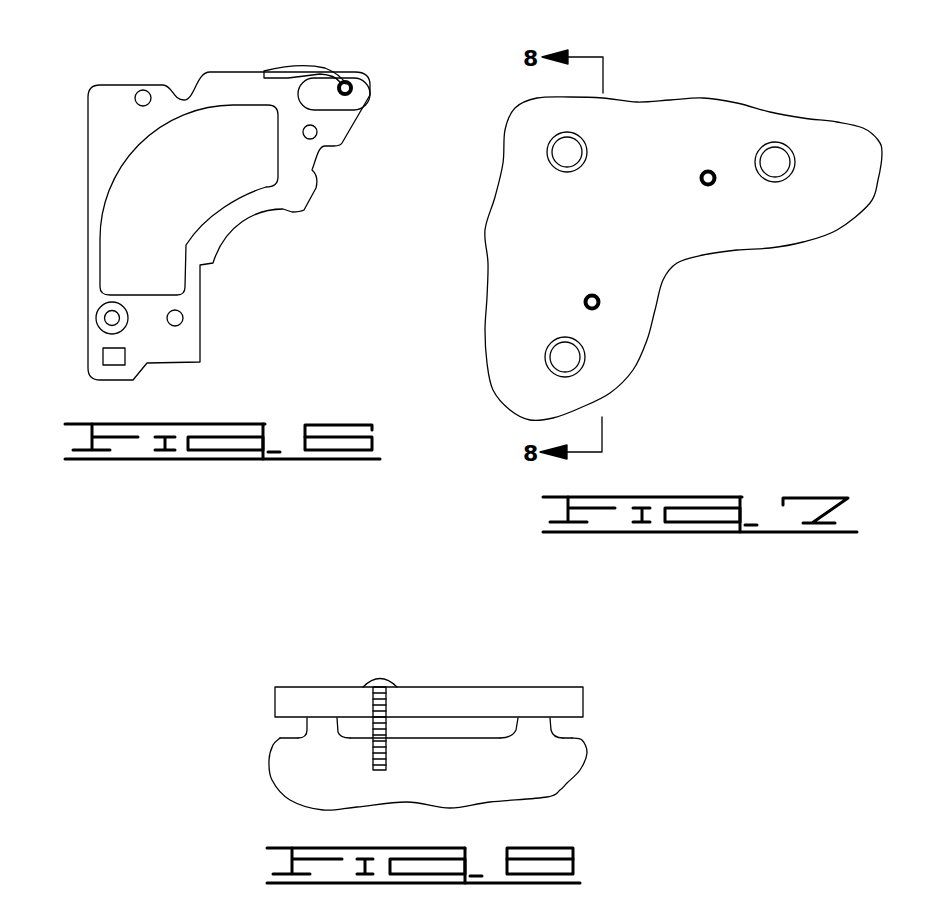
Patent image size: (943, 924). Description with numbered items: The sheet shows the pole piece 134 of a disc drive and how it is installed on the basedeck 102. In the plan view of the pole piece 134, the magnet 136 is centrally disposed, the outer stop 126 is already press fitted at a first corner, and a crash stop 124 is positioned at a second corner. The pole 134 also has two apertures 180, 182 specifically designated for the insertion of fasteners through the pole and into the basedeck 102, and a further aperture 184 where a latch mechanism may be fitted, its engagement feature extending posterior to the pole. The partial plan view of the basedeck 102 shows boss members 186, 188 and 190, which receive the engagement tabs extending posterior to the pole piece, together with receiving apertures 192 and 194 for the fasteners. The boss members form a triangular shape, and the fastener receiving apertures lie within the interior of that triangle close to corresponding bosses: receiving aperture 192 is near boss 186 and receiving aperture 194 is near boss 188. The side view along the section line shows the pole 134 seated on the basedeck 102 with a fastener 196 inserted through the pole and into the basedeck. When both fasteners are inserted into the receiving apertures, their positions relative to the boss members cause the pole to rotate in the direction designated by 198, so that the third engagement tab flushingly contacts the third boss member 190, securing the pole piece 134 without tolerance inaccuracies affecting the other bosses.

In FIG. 6, the pole piece 134 is at (198, 60).
In FIG. 8, the pole piece 134 is at (274, 700).
In FIG. 6, the magnet 136 is at (130, 200).
In FIG. 6, the aperture 184 is at (137, 91).
In FIG. 6, the outer stop 126 is at (360, 97).
In FIG. 6, the aperture 180 is at (315, 138).
In FIG. 6, the crash stop 124 is at (99, 314).
In FIG. 6, the aperture 182 is at (183, 315).
In FIG. 7, the basedeck 102 is at (657, 112).
In FIG. 8, the basedeck 102 is at (550, 767).
In FIG. 7, the boss member 190 is at (547, 148).
In FIG. 8, the boss member 190 is at (518, 727).
In FIG. 7, the boss member 186 is at (780, 142).
In FIG. 7, the boss member 188 is at (550, 343).
In FIG. 8, the boss member 188 is at (305, 727).
In FIG. 7, the receiving aperture 192 is at (708, 187).
In FIG. 7, the receiving aperture 194 is at (592, 292).
In FIG. 8, the fastener 196 is at (379, 681).
In FIG. 8, the direction of rotation 198 is at (535, 695).